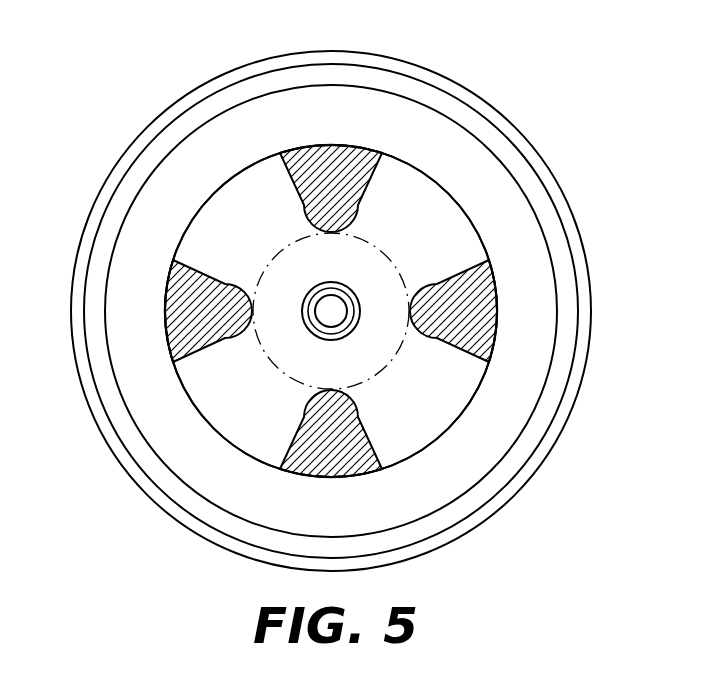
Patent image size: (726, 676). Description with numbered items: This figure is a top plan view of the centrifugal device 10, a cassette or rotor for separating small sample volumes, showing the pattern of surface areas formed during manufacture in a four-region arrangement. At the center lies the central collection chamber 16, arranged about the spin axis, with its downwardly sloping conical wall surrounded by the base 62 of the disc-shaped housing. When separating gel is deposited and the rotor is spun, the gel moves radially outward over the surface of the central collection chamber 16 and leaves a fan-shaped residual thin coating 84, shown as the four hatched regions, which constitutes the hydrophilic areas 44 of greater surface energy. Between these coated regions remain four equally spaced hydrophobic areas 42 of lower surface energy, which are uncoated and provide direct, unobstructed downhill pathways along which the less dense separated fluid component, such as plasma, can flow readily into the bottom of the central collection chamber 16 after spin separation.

The centrifugal device 10 is at (166, 51).
The central collection chamber 16 is at (357, 352).
The hydrophobic areas 42 is at (302, 175).
The hydrophilic areas 44 is at (432, 223).
The base 62 is at (520, 487).
The fan-shaped residual thin coating 84 is at (350, 158).